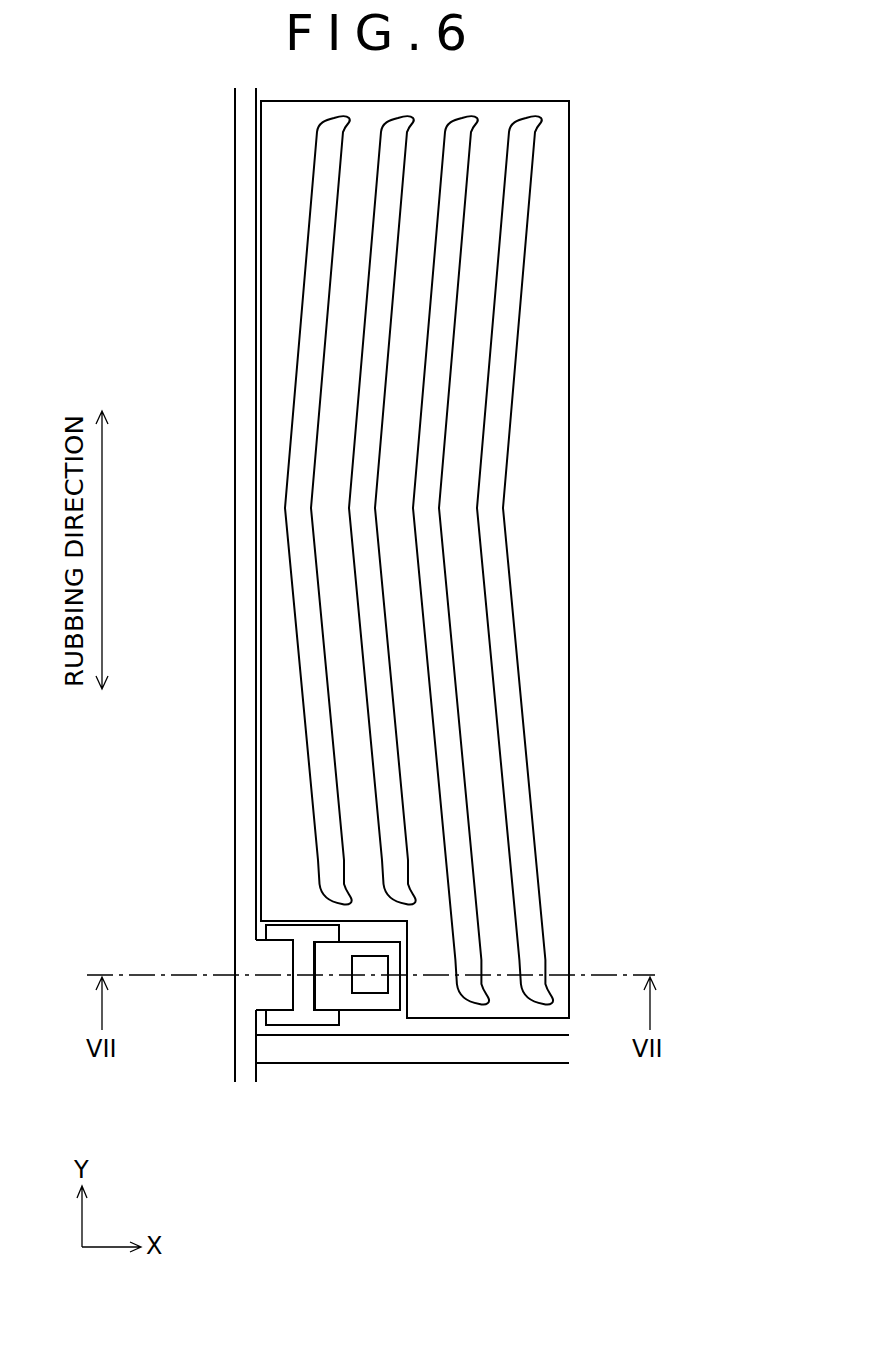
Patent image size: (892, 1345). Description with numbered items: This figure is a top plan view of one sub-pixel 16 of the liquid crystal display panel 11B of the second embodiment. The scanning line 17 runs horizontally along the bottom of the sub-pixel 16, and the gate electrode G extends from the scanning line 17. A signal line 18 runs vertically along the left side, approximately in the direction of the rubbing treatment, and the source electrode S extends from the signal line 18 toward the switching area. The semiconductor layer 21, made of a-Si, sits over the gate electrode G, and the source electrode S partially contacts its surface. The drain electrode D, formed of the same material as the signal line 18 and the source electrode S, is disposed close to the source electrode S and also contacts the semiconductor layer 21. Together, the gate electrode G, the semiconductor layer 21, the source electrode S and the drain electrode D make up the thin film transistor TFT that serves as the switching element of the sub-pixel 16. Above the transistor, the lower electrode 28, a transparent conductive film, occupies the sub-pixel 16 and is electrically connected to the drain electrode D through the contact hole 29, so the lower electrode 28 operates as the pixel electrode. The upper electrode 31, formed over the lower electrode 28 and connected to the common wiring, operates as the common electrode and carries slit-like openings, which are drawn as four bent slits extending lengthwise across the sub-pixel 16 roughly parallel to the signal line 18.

The liquid crystal display panel 11B is at (106, 133).
The sub-pixel 16 is at (560, 374).
The scanning line 17 is at (485, 1052).
The signal line 18 is at (245, 788).
The semiconductor layer 21 is at (304, 995).
The lower electrode 28 is at (277, 667).
The contact hole 29 is at (373, 980).
The upper electrode 31 is at (307, 595).
The source electrode S is at (281, 985).
The drain electrode D is at (320, 982).
The gate electrode G is at (320, 1032).
The thin film transistor TFT is at (303, 955).